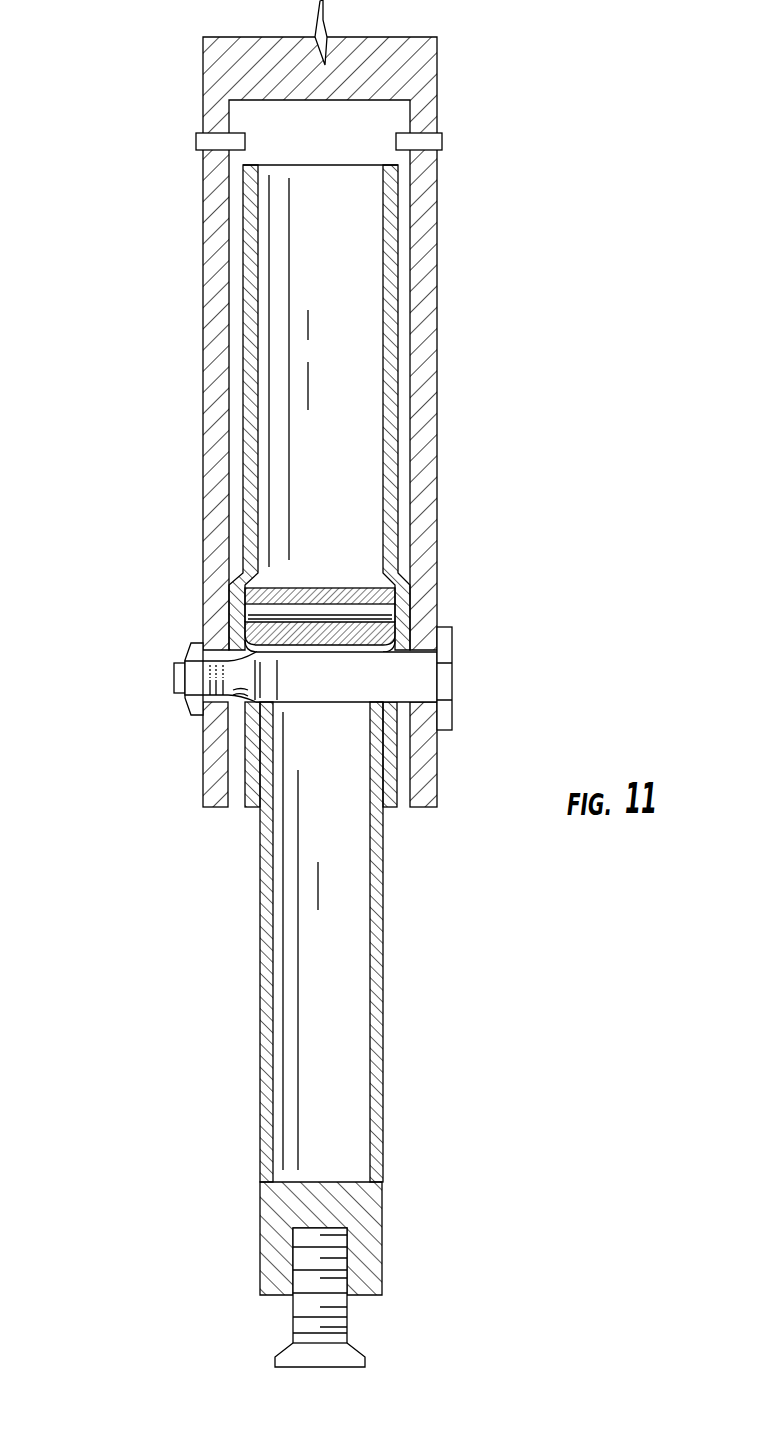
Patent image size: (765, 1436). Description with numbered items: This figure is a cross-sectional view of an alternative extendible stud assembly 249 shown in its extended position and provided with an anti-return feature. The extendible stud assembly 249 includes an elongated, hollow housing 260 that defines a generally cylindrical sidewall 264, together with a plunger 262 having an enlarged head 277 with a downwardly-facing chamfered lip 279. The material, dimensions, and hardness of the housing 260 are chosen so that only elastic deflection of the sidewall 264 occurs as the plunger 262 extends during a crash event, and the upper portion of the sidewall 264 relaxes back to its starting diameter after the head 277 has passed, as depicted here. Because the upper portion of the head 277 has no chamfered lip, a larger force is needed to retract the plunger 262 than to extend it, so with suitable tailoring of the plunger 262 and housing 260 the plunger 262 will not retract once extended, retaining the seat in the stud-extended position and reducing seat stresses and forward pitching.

The extendible stud assembly 249 is at (291, 683).
The housing 260 is at (386, 808).
The plunger 262 is at (373, 1018).
The sidewall 264 is at (390, 287).
The enlarged head 277 is at (323, 583).
The chamfered lip 279 is at (405, 615).